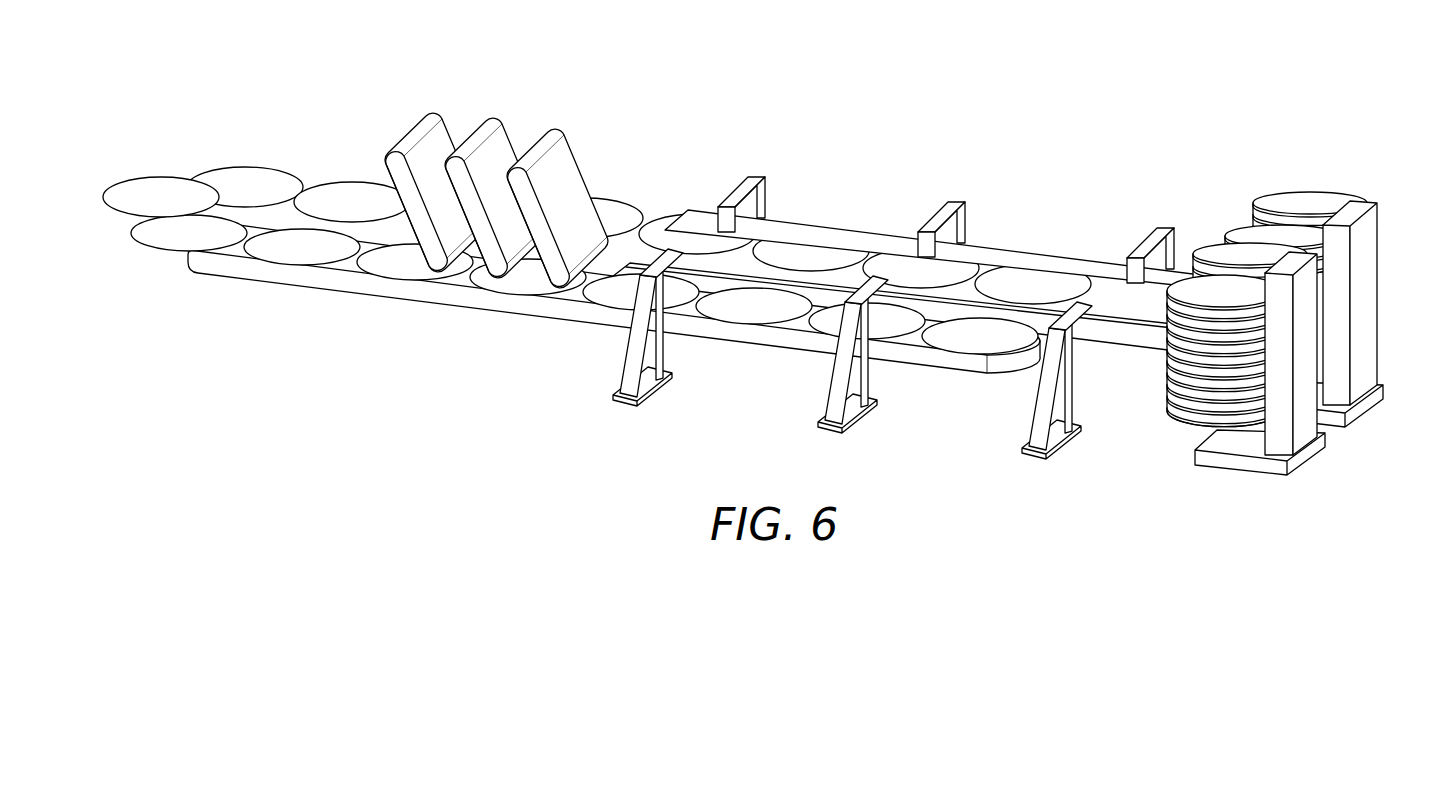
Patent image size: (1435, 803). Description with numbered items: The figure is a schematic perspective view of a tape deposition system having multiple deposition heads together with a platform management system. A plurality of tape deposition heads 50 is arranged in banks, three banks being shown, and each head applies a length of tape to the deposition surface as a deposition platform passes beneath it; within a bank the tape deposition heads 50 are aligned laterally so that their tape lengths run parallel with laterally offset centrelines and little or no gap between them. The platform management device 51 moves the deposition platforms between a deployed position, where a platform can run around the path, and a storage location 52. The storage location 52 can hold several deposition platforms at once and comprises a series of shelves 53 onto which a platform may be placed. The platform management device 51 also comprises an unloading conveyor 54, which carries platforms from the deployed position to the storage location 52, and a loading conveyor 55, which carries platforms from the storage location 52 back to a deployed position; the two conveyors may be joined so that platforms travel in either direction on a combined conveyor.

The tape deposition heads 50 is at (536, 99).
The platform management device 51 is at (872, 165).
The storage location 52 is at (1370, 250).
The shelves 53 is at (1308, 198).
The unloading conveyor 54 is at (1055, 262).
The loading conveyor 55 is at (968, 320).